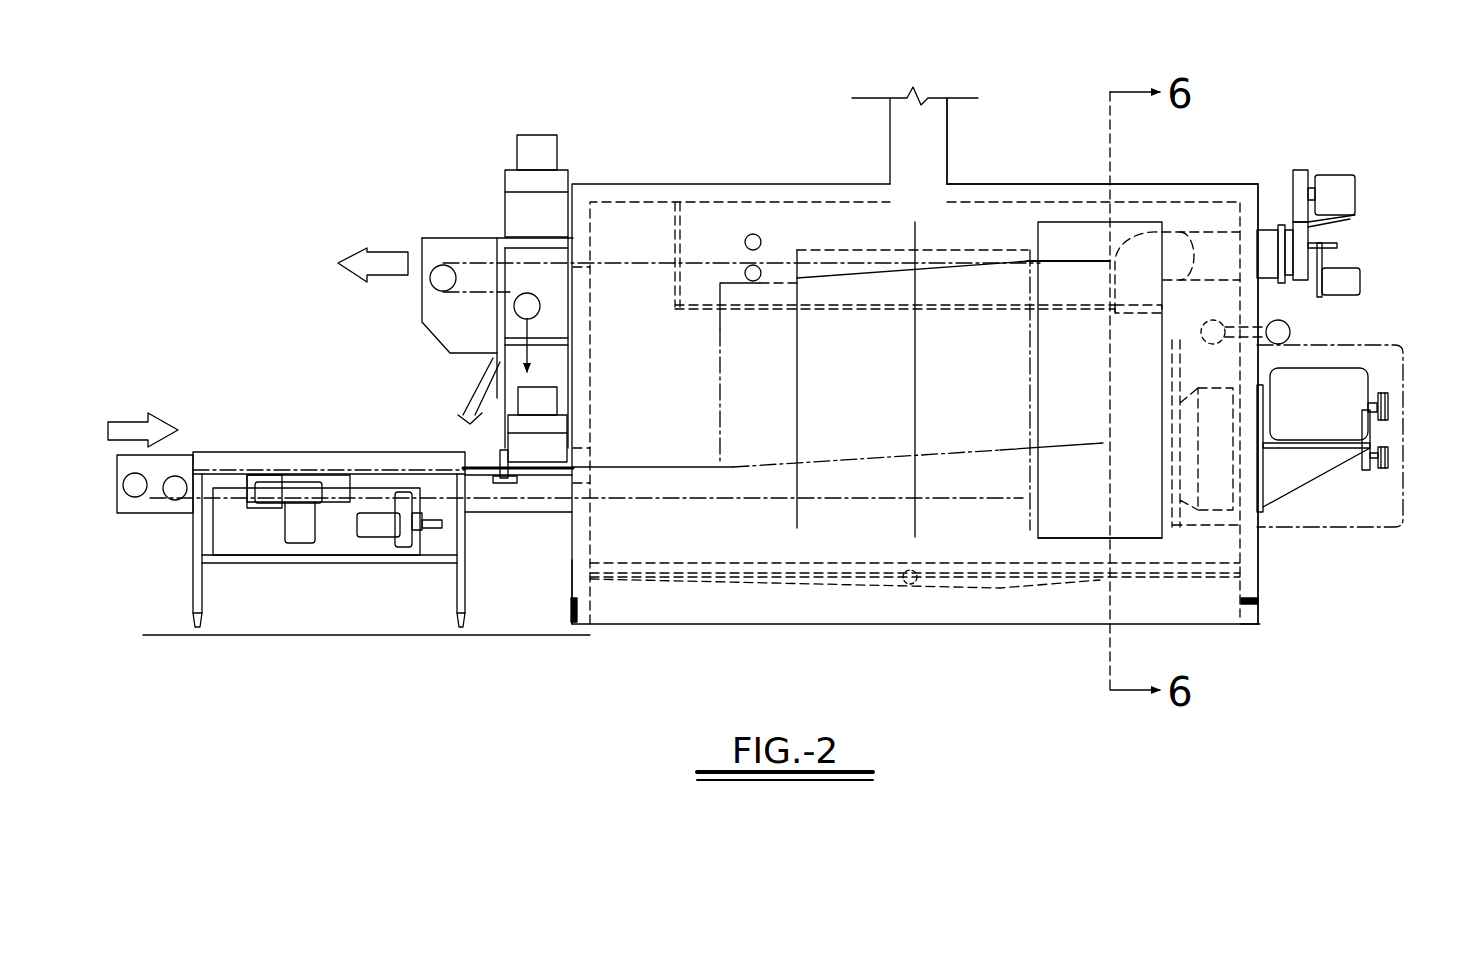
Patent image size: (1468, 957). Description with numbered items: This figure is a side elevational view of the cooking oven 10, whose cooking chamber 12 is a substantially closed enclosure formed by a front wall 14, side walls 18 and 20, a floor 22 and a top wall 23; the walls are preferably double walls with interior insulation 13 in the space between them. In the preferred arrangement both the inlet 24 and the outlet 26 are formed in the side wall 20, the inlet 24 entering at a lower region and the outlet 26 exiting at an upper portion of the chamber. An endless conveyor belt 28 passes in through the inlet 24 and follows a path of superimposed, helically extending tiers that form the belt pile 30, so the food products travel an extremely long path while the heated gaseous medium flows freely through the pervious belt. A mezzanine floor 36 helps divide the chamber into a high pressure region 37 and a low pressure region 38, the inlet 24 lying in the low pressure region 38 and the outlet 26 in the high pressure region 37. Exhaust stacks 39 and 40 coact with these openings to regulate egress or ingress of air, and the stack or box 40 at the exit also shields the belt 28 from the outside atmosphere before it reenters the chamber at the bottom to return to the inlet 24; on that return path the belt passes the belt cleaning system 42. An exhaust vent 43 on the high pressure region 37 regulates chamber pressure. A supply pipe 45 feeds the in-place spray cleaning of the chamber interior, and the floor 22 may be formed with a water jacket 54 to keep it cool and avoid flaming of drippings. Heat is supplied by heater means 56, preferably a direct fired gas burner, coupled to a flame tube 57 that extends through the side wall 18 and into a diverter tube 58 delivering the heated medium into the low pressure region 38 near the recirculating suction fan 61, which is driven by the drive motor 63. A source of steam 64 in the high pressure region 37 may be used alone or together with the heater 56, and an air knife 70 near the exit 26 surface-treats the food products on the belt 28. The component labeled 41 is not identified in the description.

The cooking oven 10 is at (737, 117).
The cooking chamber 12 is at (630, 220).
The interior insulation 13 is at (1248, 207).
The front wall 14 is at (698, 553).
The side wall 18 is at (1260, 557).
The side wall 20 is at (570, 577).
The floor 22 is at (845, 563).
The top wall 23 is at (1080, 183).
The inlet 24 is at (592, 466).
The outlet 26 is at (592, 265).
The endless conveyor belt 28 is at (270, 470).
The belt pile 30 is at (718, 387).
The mezzanine floor 36 is at (707, 310).
The high pressure region 37 is at (973, 222).
The low pressure region 38 is at (1128, 541).
The exhaust stack 39 is at (506, 192).
The exhaust stack 40 is at (523, 442).
The strut 41 is at (473, 397).
The belt cleaning system 42 is at (345, 576).
The exhaust vent 43 is at (921, 145).
The supply pipe 45 is at (913, 587).
The water jacket 54 is at (1097, 576).
The heater means 56 is at (1338, 174).
The flame tube 57 is at (1210, 251).
The diverter tube 58 is at (1140, 284).
The recirculating suction fan 61 is at (1198, 450).
The drive motor 63 is at (1381, 384).
The source of steam 64 is at (1298, 332).
The air knife 70 is at (764, 232).